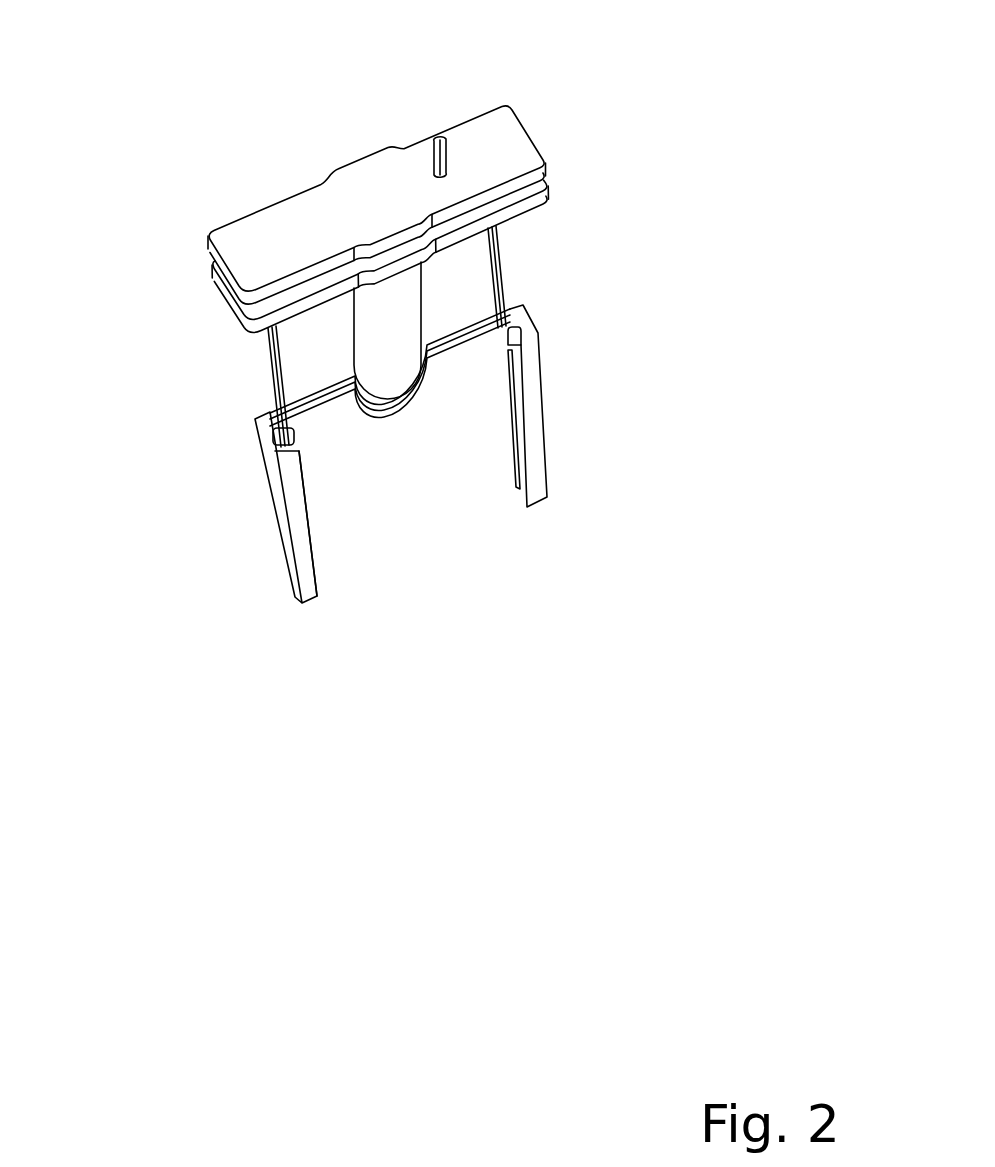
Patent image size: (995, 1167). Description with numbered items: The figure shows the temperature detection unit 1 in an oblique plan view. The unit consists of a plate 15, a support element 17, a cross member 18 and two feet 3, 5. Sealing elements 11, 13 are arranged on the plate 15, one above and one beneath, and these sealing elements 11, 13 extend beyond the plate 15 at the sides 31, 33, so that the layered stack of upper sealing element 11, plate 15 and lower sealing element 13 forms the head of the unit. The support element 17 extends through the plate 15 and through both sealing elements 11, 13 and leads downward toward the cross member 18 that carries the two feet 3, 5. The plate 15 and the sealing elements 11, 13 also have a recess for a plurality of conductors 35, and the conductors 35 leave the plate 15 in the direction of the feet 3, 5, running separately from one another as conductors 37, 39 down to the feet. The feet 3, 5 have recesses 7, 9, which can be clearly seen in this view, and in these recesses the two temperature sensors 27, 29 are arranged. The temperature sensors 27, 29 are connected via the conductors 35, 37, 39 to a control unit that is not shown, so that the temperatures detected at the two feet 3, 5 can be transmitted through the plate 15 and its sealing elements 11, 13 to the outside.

The temperature detection unit 1 is at (522, 56).
The side 31 is at (537, 135).
The conductors 35 is at (433, 138).
The support element 17 is at (362, 196).
The plate 15 is at (550, 178).
The sealing element 11 is at (213, 273).
The sealing element 13 is at (237, 313).
The side 33 is at (542, 220).
The conductor 39 is at (504, 283).
The conductor 37 is at (267, 358).
The recess 9 is at (533, 372).
The cross member 18 is at (437, 358).
The recess 7 is at (313, 460).
The foot 5 is at (536, 483).
The foot 3 is at (281, 543).
The temperature sensor 29 is at (503, 474).
The temperature sensor 27 is at (324, 551).